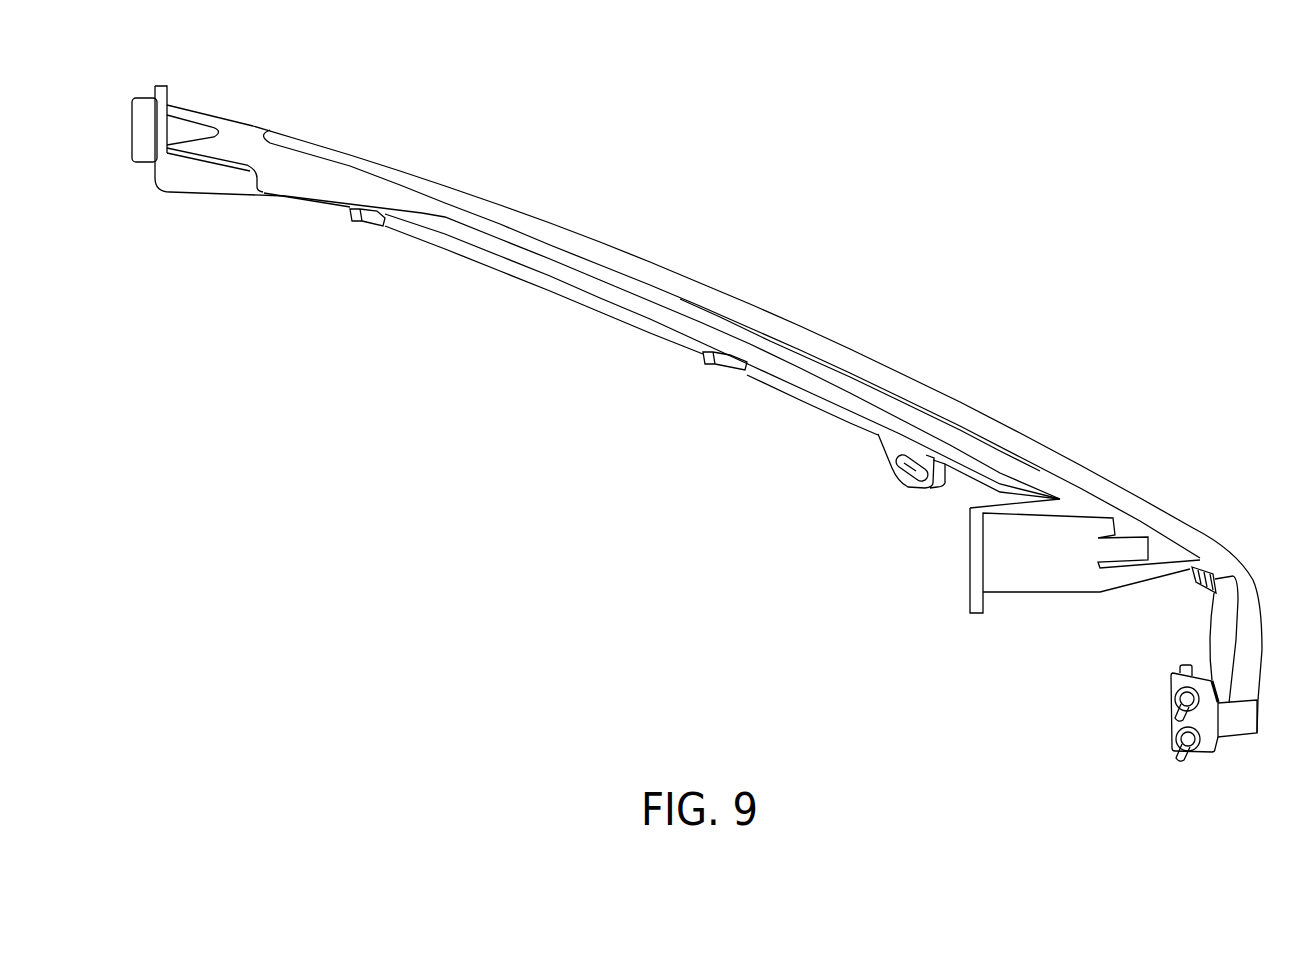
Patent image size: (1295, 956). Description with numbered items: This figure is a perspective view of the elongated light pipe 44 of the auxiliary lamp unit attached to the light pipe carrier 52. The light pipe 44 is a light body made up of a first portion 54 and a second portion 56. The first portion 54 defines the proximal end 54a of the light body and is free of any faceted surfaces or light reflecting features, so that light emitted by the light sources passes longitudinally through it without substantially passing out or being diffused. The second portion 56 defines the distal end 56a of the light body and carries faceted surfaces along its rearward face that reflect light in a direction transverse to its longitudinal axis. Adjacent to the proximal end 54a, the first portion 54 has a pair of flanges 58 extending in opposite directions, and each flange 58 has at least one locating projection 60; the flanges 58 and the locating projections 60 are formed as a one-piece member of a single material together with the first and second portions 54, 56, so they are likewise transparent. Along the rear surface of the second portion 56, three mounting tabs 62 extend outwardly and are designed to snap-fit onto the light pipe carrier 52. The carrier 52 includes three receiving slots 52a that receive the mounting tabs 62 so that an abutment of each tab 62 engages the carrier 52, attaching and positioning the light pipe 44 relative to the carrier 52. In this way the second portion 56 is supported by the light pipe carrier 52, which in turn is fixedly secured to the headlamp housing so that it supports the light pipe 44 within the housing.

The elongated light pipe 44 is at (600, 238).
The light pipe carrier 52 is at (234, 127).
The receiving slots 52a is at (403, 222).
The first portion 54 is at (1223, 620).
The proximal end 54a is at (1221, 737).
The second portion 56 is at (833, 341).
The distal end 56a is at (261, 123).
The flanges 58 is at (1187, 667).
The locating projection 60 is at (1174, 720).
The mounting tabs 62 is at (354, 222).